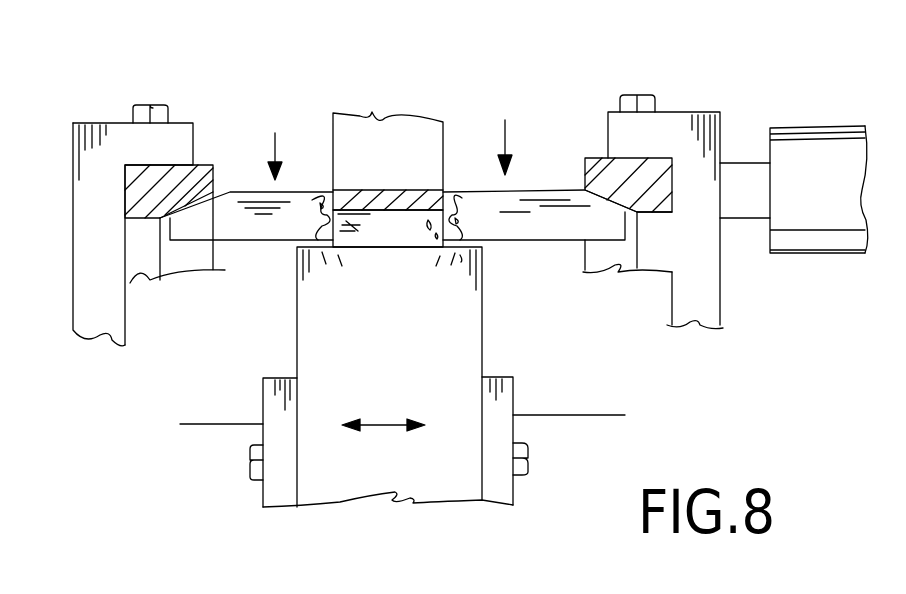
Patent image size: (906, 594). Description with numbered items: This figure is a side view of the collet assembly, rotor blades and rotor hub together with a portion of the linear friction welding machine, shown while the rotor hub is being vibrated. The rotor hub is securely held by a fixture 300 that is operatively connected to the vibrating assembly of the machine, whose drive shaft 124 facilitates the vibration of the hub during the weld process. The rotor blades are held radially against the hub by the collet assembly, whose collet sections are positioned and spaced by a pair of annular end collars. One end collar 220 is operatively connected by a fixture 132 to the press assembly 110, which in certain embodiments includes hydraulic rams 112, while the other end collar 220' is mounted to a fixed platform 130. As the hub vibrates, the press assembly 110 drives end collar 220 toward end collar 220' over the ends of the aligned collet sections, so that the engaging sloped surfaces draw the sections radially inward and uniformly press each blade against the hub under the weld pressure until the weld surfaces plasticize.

The press assembly 110 is at (797, 128).
The hydraulic ram 112 is at (743, 190).
The drive shaft 124 is at (572, 443).
The fixed platform 130 is at (115, 142).
The fixture 132 is at (663, 123).
The end collar 220 is at (416, 153).
The end collar 220' is at (218, 149).
The fixture 300 is at (505, 388).